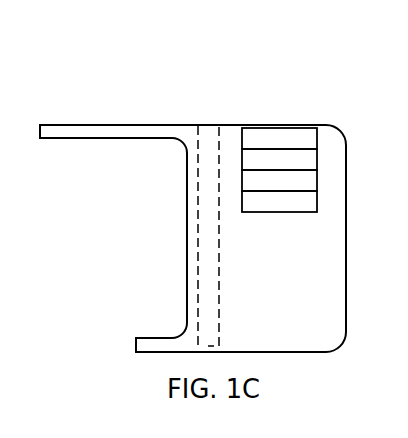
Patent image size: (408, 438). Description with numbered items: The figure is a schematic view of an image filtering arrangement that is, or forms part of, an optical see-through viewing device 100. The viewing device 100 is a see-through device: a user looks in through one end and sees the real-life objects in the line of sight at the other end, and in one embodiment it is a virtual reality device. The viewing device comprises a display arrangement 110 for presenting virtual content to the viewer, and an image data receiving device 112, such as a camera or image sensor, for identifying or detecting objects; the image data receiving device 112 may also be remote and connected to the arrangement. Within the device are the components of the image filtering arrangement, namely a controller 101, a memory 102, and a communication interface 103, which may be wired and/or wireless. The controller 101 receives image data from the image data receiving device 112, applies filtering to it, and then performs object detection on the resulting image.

The optical see-through viewing device 100 is at (147, 90).
The display arrangement 110 is at (212, 128).
The controller 101 is at (279, 139).
The memory 102 is at (279, 160).
The communication interface 103 is at (279, 181).
The image data receiving device 112 is at (279, 202).